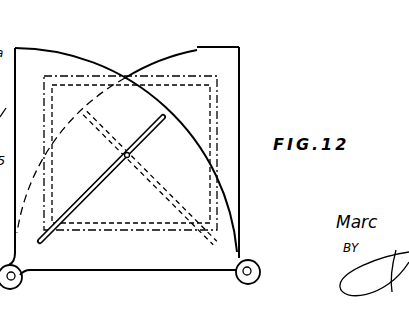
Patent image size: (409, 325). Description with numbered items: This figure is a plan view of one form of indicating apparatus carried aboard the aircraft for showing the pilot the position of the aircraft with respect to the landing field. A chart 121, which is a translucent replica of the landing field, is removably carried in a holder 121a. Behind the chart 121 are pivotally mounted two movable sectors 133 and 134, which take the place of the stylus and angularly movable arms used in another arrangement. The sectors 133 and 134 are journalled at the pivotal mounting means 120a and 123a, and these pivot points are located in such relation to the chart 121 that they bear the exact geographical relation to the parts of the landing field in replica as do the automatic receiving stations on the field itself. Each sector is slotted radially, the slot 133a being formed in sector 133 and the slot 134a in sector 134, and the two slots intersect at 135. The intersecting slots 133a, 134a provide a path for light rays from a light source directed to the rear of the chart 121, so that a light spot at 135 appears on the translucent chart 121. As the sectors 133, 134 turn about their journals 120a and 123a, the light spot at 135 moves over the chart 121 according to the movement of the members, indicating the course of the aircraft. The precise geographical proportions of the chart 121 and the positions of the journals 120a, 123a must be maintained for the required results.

The movable sector 133 is at (60, 57).
The movable sector 134 is at (197, 55).
The chart 121 is at (212, 95).
The holder 121a is at (190, 107).
The radial slot 134a is at (112, 133).
The radial slot 133a is at (99, 189).
The intersection of the slots 135 is at (131, 156).
The pivotal mounting means 120a is at (12, 282).
The pivotal mounting means 123a is at (245, 276).